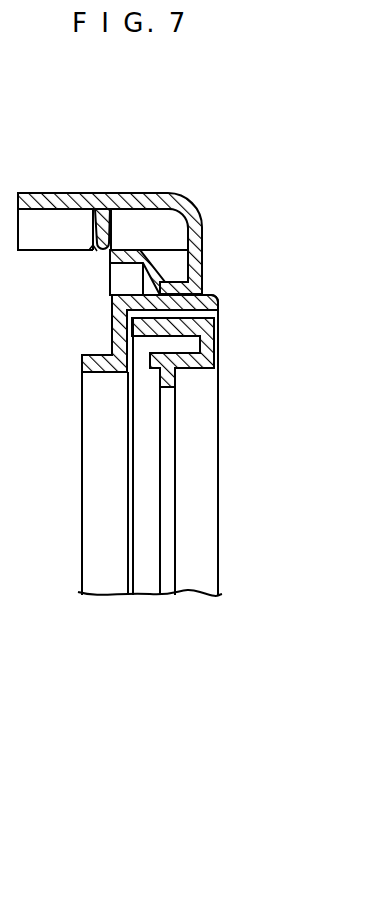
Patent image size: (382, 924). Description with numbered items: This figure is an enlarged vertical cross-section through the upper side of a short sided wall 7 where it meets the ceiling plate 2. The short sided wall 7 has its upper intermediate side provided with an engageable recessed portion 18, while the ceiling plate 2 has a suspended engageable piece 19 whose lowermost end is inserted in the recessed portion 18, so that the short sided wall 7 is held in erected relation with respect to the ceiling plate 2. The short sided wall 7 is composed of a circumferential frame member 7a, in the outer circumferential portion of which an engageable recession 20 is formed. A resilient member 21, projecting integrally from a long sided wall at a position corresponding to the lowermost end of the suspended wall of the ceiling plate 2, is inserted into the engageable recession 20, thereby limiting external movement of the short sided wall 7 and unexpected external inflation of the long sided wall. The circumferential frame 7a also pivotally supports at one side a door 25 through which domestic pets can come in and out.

The ceiling plate 2 is at (163, 193).
The short sided wall 7 is at (208, 290).
The circumferential frame member 7a is at (214, 293).
The engageable recessed portion 18 is at (90, 250).
The suspended engageable piece 19 is at (100, 238).
The engageable recession 20 is at (152, 283).
The resilient member 21 is at (182, 286).
The door 25 is at (219, 348).